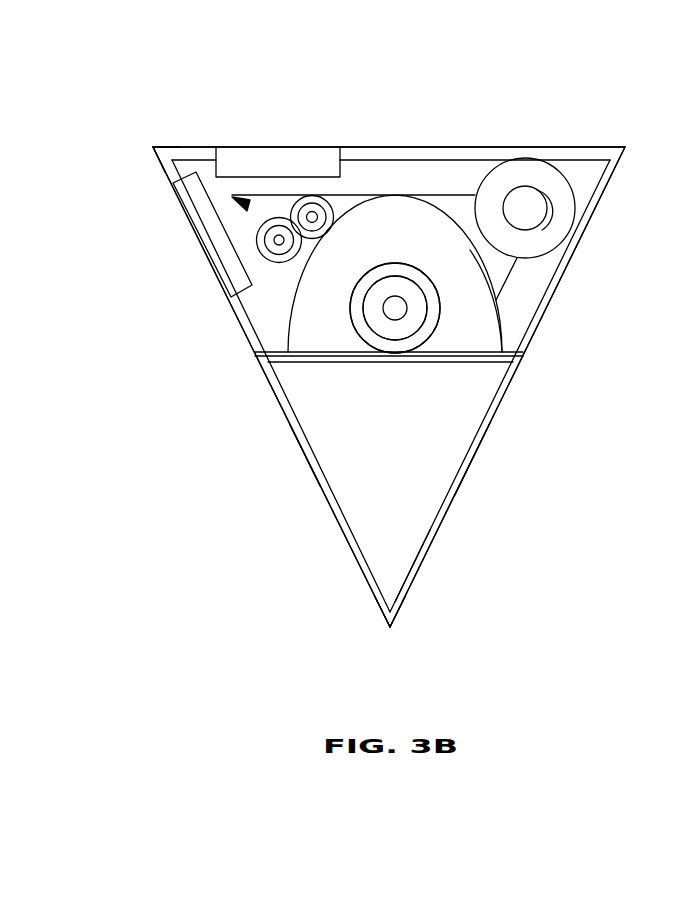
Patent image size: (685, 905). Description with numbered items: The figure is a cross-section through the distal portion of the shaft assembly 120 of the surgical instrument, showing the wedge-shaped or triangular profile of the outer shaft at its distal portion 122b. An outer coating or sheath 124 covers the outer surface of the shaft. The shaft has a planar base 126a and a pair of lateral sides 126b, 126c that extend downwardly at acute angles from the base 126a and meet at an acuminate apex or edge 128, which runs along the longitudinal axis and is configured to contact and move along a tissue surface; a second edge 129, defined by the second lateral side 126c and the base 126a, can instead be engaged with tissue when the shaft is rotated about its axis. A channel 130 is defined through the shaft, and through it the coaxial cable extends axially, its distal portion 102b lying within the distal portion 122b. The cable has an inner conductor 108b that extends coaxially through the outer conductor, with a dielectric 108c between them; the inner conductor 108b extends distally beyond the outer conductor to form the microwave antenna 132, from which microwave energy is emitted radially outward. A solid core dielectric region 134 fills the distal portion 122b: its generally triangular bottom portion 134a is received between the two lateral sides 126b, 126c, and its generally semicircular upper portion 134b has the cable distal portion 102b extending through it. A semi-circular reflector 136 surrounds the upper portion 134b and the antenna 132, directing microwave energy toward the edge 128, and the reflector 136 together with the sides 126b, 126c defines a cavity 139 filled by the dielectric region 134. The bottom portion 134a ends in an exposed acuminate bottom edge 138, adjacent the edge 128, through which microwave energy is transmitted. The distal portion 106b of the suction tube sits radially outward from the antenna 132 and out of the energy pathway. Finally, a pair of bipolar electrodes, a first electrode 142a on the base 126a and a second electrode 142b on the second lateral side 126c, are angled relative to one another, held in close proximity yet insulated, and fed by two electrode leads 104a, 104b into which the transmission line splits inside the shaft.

The distal portion of the coaxial cable 102b is at (448, 287).
The electrode lead 104a is at (293, 210).
The electrode lead 104b is at (275, 243).
The distal portion of the suction tube 106b is at (525, 208).
The inner conductor 108b is at (393, 343).
The dielectric 108c is at (370, 297).
The shaft assembly 120 is at (481, 595).
The distal portion of the outer shaft 122b is at (356, 578).
The sheath 124 is at (565, 273).
The base 126a is at (357, 147).
The side 126b is at (471, 462).
The second lateral side 126c is at (308, 460).
The edge 128 is at (390, 630).
The second edge 129 is at (153, 147).
The channel 130 is at (197, 208).
The microwave antenna 132 is at (397, 300).
The dielectric region 134 is at (437, 490).
The bottom portion of the dielectric region 134a is at (287, 373).
The upper portion of the dielectric region 134b is at (402, 213).
The reflector 136 is at (502, 325).
The bottom edge 138 is at (403, 583).
The cavity 139 is at (343, 505).
The first electrode 142a is at (233, 161).
The second electrode 142b is at (178, 215).